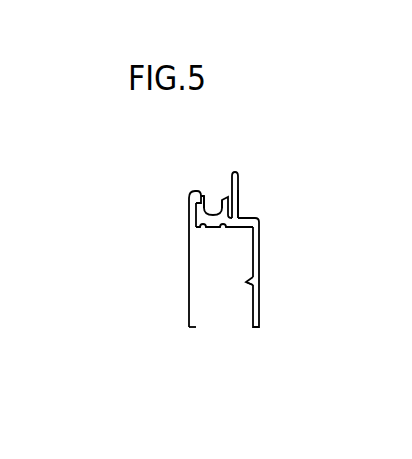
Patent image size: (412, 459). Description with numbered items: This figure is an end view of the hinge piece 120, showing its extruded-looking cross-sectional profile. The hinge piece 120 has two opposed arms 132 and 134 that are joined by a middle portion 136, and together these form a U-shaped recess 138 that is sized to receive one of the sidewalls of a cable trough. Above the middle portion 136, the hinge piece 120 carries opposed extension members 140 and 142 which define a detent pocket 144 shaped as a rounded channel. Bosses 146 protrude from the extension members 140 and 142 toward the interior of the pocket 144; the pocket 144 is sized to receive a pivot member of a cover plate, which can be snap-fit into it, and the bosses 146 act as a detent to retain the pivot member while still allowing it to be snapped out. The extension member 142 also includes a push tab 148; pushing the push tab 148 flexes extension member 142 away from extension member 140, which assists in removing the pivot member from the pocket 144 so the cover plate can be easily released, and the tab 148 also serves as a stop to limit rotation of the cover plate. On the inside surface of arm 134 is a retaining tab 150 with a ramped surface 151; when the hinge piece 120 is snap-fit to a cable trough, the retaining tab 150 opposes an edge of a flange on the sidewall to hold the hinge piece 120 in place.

The hinge piece 120 is at (325, 148).
The arm 132 is at (190, 270).
The arm 134 is at (259, 255).
The middle portion 136 is at (241, 218).
The U-shaped recess 138 is at (223, 249).
The extension member 140 is at (190, 198).
The extension member 142 is at (239, 197).
The detent pocket 144 is at (204, 194).
The bosses 146 is at (202, 196).
The push tab 148 is at (234, 176).
The retaining tab 150 is at (250, 282).
The ramped surface 151 is at (247, 283).